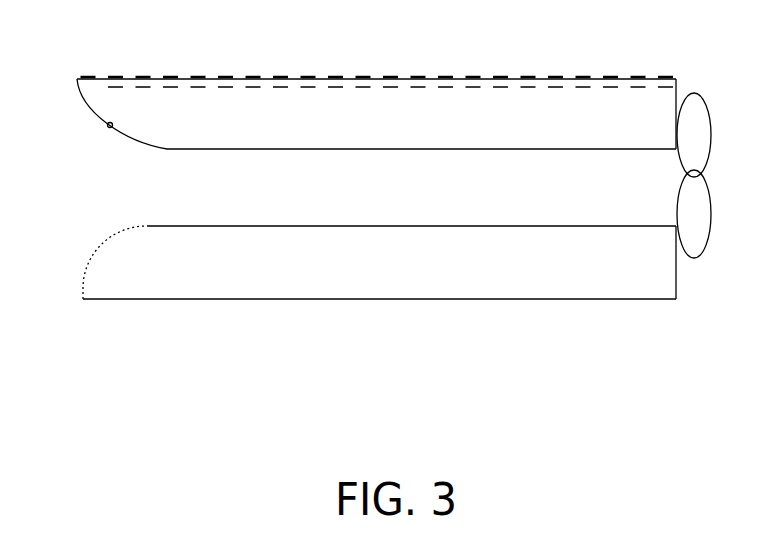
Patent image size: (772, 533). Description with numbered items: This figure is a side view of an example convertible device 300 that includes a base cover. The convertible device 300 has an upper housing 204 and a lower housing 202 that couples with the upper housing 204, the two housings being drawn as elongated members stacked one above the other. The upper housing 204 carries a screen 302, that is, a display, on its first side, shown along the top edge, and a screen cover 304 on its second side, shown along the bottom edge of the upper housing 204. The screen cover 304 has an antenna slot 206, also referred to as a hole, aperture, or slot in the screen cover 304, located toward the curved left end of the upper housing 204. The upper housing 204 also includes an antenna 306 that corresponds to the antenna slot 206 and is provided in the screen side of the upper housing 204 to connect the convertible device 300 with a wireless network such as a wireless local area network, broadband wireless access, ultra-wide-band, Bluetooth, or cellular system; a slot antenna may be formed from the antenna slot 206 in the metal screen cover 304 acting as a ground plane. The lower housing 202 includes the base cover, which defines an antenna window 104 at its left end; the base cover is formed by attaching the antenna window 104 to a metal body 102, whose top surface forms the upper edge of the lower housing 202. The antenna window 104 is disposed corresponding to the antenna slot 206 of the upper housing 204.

The convertible device 300 is at (396, 226).
The screen 302 is at (521, 77).
The screen cover 304 is at (530, 150).
The upper housing 204 is at (385, 100).
The antenna slot 206 is at (106, 128).
The antenna 306 is at (114, 125).
The lower housing 202 is at (396, 245).
The metal body 102 is at (500, 226).
The antenna window 104 is at (107, 245).